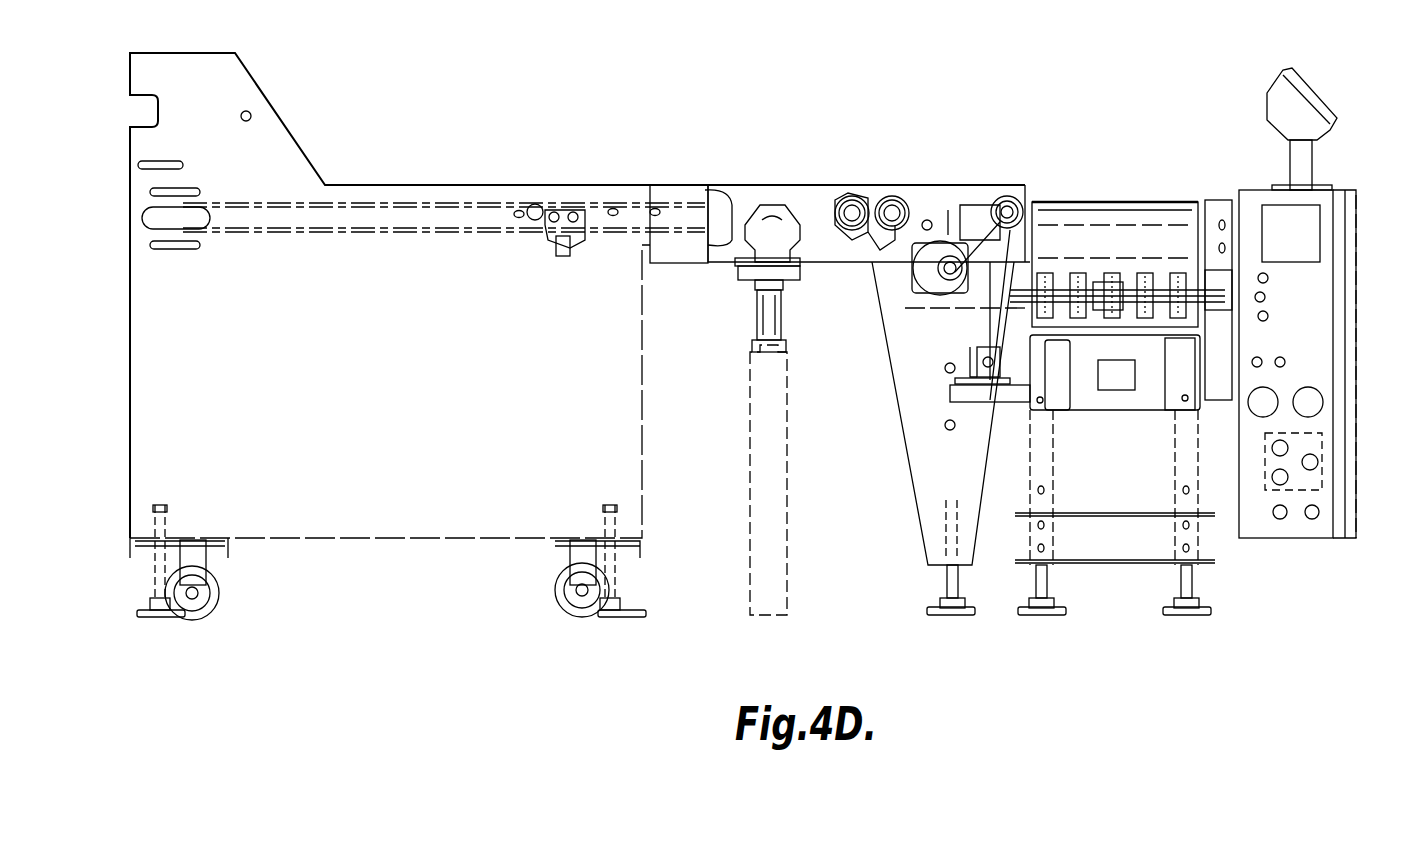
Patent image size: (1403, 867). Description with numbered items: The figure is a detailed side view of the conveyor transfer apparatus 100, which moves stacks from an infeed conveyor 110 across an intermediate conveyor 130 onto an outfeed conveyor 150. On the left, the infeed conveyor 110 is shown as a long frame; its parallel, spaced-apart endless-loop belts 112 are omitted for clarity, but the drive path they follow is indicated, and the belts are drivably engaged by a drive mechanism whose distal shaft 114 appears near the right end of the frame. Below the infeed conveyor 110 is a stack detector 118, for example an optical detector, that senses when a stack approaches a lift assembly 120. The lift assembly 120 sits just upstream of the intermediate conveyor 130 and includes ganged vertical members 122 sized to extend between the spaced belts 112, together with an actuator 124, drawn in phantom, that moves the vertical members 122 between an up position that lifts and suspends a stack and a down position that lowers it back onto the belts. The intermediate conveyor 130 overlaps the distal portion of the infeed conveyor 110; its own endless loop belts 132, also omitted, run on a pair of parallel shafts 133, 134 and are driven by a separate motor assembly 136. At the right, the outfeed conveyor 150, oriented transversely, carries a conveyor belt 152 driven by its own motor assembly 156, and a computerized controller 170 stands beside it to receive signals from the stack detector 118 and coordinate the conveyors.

The conveyor transfer apparatus 100 is at (745, 82).
The infeed conveyor 110 is at (422, 200).
The endless-loop belts 112 is at (513, 205).
The distal shaft 114 is at (893, 198).
The stack detector 118 is at (563, 257).
The lift assembly 120 is at (780, 310).
The vertical members 122 is at (745, 228).
The actuator 124 is at (790, 492).
The intermediate conveyor 130 is at (877, 182).
The endless loop belts 132 is at (950, 205).
The parallel shaft 133 is at (848, 198).
The parallel shaft 134 is at (1020, 194).
The motor assembly 136 is at (913, 268).
The outfeed conveyor 150 is at (1145, 200).
The conveyor belt 152 is at (1105, 200).
The motor assembly 156 is at (1088, 400).
The computerized controller 170 is at (1335, 182).